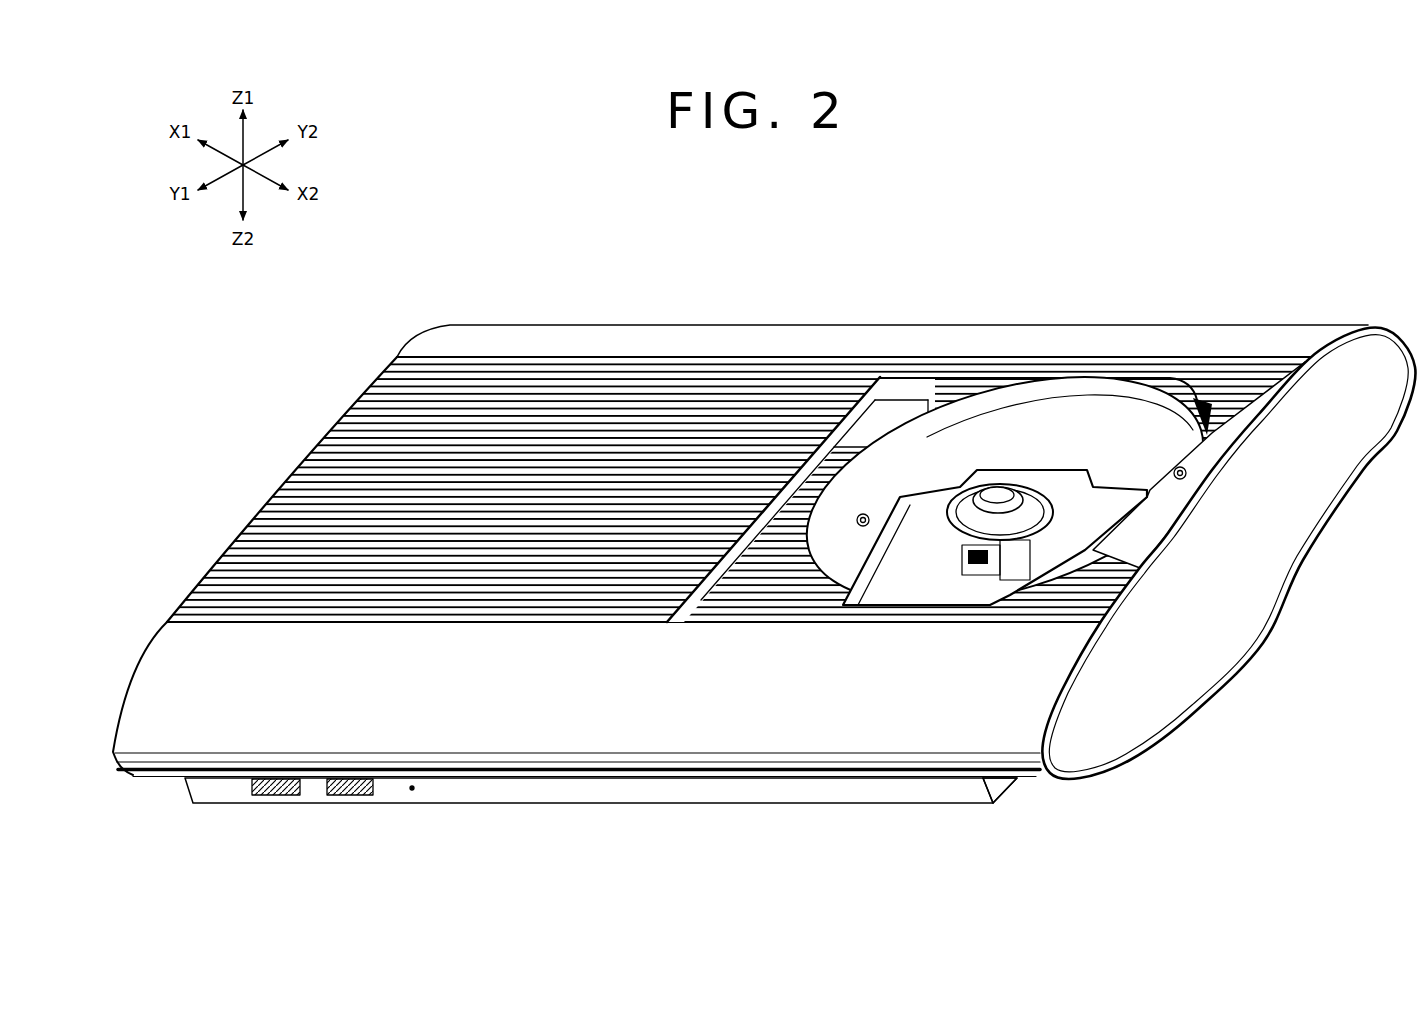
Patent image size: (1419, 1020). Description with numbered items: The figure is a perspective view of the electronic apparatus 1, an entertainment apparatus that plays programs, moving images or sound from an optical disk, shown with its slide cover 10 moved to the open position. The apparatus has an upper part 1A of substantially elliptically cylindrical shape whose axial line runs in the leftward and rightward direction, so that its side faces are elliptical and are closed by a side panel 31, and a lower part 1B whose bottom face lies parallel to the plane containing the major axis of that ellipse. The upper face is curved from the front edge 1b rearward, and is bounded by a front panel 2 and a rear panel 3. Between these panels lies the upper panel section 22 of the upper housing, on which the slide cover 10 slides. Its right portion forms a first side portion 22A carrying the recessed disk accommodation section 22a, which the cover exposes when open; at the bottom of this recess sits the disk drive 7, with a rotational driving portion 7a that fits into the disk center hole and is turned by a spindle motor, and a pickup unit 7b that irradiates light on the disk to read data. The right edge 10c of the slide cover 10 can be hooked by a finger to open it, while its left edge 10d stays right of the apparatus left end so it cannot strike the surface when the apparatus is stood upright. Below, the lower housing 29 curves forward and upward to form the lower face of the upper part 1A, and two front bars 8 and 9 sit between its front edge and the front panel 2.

The electronic apparatus 1 is at (800, 278).
The upper part 1A is at (1168, 722).
The lower part 1B is at (1017, 790).
The front edge 1b is at (590, 758).
The front panel 2 is at (160, 678).
The rear panel 3 is at (690, 338).
The disk drive 7 is at (935, 510).
The rotational driving portion 7a is at (1003, 498).
The pickup unit 7b is at (1133, 572).
The front bar 8 is at (455, 780).
The front bar 9 is at (697, 768).
The slide cover 10 is at (498, 392).
The right edge 10c is at (880, 375).
The left edge 10d is at (350, 392).
The upper panel section 22 is at (1167, 355).
The first side portion 22A is at (946, 375).
The disk accommodation section 22a is at (1027, 425).
The lower housing 29 is at (853, 805).
The side panel 31 is at (1338, 473).